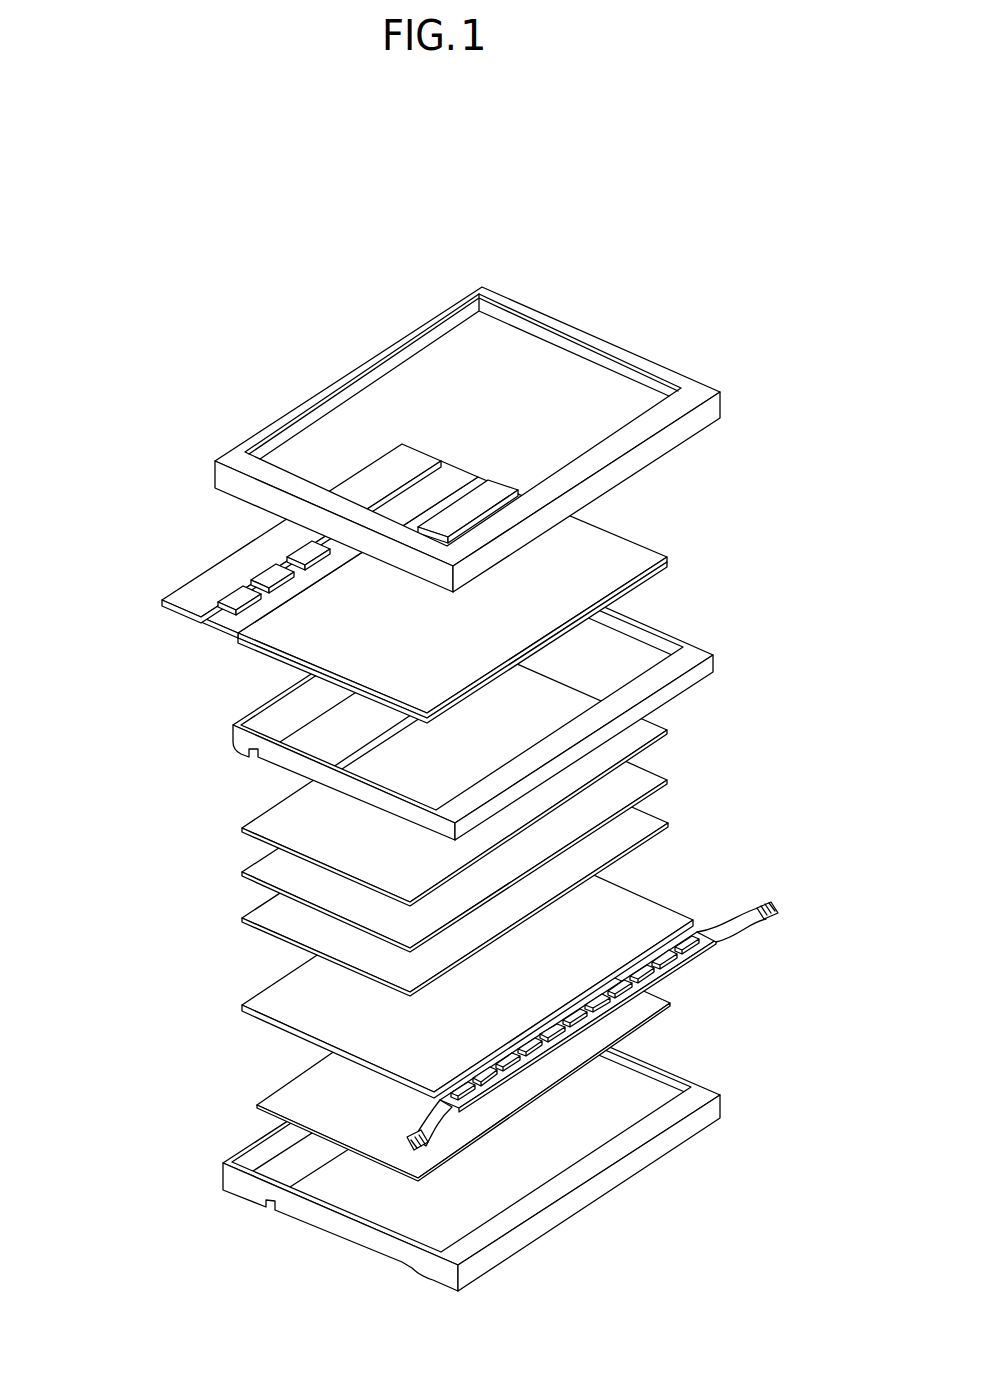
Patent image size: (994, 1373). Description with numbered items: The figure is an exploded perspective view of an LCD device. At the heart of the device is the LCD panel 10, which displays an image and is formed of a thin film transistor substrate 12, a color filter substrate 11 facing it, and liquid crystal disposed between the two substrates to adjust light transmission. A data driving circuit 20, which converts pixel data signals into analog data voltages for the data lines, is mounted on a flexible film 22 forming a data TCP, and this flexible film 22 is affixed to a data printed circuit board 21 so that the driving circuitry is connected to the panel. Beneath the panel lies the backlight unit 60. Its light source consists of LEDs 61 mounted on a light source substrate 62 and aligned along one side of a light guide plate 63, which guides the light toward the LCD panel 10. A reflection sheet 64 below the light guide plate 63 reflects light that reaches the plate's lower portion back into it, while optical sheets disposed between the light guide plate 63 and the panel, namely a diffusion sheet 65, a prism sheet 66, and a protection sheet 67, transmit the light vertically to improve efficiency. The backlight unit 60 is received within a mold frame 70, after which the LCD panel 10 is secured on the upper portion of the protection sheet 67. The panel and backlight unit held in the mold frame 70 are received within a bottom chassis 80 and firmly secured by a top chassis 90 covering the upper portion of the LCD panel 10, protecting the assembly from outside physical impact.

The LCD panel 10 is at (542, 600).
The color filter substrate 11 is at (643, 553).
The thin film transistor substrate 12 is at (668, 564).
The data driving circuit 20 is at (295, 561).
The data printed circuit board 21 is at (185, 590).
The flexible film 22 is at (217, 608).
The backlight unit 60 is at (544, 918).
The LEDs 61 is at (683, 967).
The light source substrate 62 is at (722, 933).
The light guide plate 63 is at (665, 917).
The reflection sheet 64 is at (668, 1012).
The diffusion sheet 65 is at (668, 825).
The prism sheet 66 is at (667, 782).
The protection sheet 67 is at (522, 781).
The mold frame 70 is at (713, 660).
The bottom chassis 80 is at (715, 1112).
The top chassis 90 is at (718, 407).